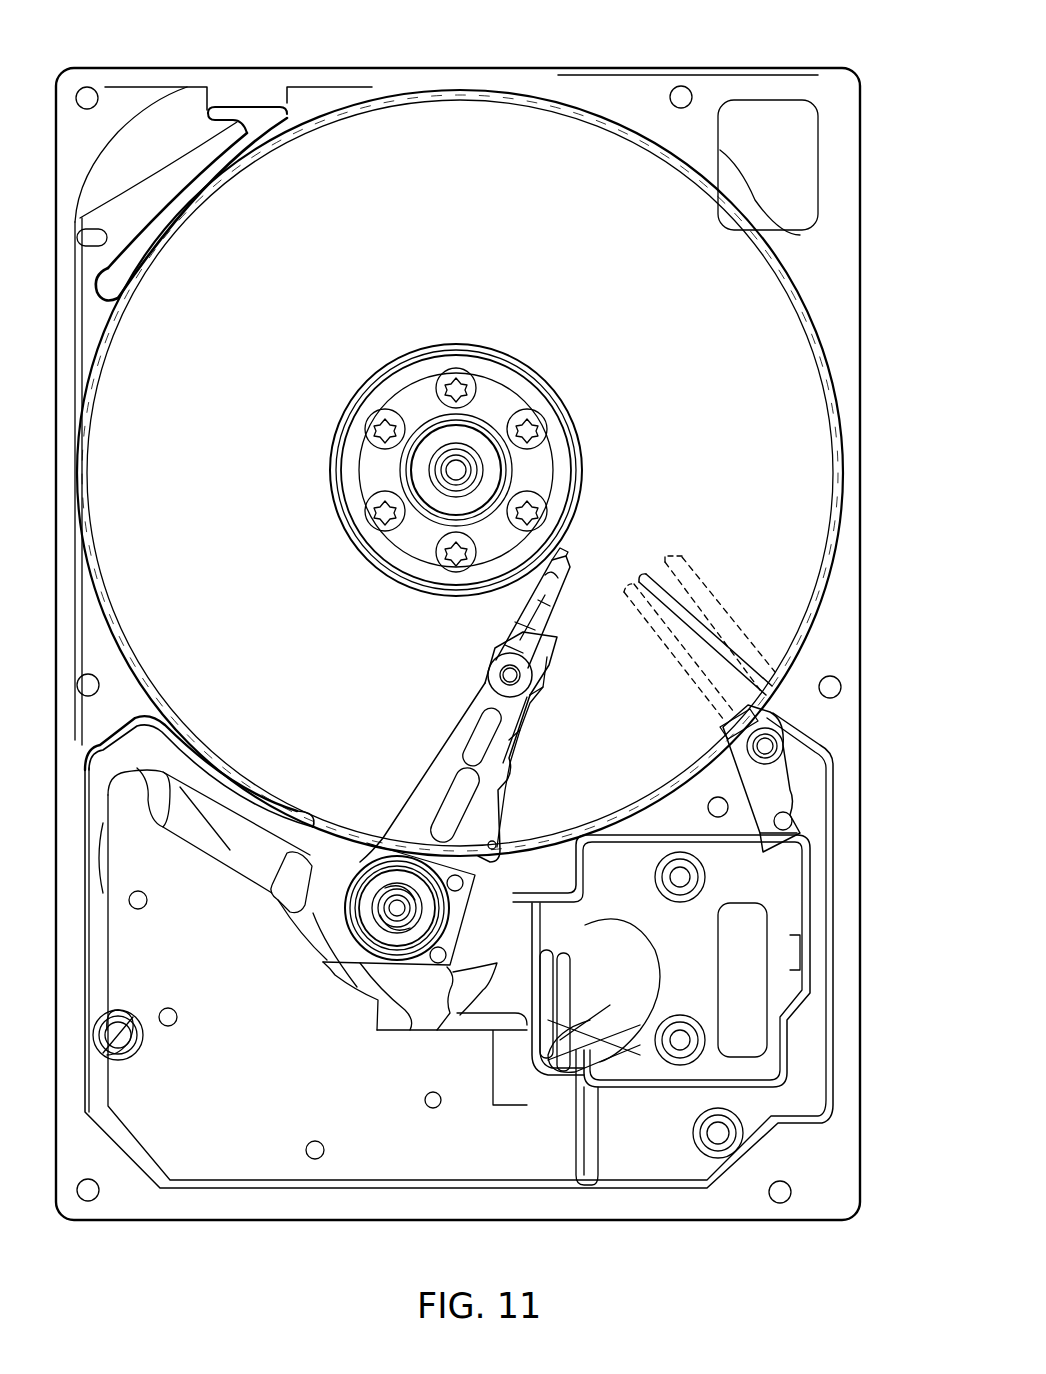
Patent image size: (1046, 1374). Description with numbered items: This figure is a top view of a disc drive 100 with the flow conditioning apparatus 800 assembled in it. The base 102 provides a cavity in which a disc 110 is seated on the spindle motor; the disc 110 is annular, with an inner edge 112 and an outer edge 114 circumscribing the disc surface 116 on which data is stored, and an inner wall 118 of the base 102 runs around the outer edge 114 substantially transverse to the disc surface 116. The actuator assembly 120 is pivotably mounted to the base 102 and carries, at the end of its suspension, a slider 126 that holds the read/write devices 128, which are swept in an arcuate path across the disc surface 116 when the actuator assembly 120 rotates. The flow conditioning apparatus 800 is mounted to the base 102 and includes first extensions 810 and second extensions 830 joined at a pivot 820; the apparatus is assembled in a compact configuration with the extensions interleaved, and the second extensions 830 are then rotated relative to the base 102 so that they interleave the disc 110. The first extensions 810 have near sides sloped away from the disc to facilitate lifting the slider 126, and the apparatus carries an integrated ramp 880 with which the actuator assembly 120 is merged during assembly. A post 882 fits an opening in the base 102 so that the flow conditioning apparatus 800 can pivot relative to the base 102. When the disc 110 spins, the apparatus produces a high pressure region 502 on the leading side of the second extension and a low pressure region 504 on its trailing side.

The disc drive 100 is at (278, 40).
The base 102 is at (540, 68).
The disc 110 is at (672, 188).
The inner edge 112 is at (378, 362).
The outer edge 114 is at (130, 290).
The disc surface 116 is at (278, 251).
The inner wall 118 is at (780, 262).
The actuator assembly 120 is at (372, 785).
The slider 126 is at (539, 595).
The read/write devices 128 is at (589, 595).
The high pressure region 502 is at (640, 646).
The low pressure region 504 is at (639, 542).
The flow conditioning apparatus 800 is at (818, 712).
The first extensions 810 is at (738, 740).
The pivot 820 is at (767, 757).
The second extensions 830 is at (700, 598).
The integrated ramp 880 is at (735, 722).
The post 882 is at (792, 822).